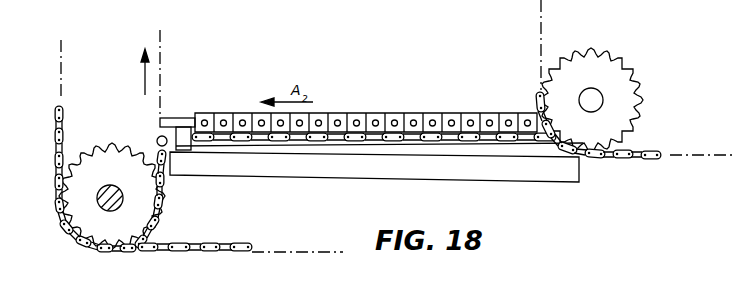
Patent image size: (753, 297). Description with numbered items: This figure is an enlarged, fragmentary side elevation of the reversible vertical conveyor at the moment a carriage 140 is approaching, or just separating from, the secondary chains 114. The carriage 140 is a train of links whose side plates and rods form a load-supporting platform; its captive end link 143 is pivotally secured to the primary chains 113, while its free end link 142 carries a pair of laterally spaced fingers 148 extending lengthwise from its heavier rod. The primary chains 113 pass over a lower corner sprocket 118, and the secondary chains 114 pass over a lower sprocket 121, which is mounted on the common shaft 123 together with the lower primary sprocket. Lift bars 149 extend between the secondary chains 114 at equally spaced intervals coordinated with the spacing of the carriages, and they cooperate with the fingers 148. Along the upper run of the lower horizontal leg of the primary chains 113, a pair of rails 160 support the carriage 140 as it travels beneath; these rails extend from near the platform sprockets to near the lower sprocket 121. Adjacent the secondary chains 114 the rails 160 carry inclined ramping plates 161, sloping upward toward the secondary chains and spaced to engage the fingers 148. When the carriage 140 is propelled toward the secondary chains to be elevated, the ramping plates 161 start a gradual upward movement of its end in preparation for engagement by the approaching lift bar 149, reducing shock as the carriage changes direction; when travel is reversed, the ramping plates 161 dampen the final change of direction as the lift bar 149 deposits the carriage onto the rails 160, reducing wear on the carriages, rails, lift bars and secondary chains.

The primary chains 113 is at (213, 247).
The secondary chains 114 is at (163, 209).
The lower corner sprocket 118 is at (607, 72).
The lower sprocket 121 is at (85, 202).
The common shaft 123 is at (119, 207).
The carriage 140 is at (511, 94).
The free end link 142 is at (198, 114).
The captive end link 143 is at (548, 119).
The fingers 148 is at (170, 118).
The lift bars 149 is at (157, 138).
The rails 160 is at (387, 165).
The ramping plates 161 is at (184, 142).